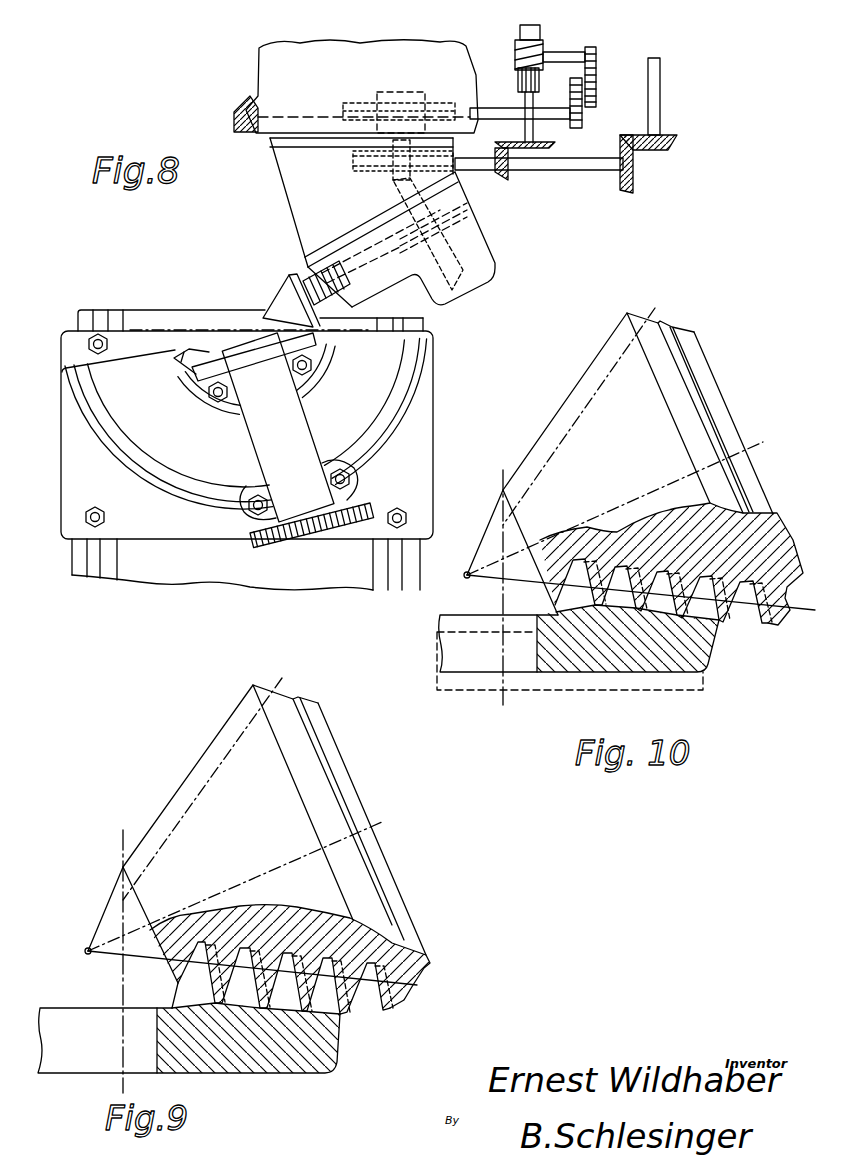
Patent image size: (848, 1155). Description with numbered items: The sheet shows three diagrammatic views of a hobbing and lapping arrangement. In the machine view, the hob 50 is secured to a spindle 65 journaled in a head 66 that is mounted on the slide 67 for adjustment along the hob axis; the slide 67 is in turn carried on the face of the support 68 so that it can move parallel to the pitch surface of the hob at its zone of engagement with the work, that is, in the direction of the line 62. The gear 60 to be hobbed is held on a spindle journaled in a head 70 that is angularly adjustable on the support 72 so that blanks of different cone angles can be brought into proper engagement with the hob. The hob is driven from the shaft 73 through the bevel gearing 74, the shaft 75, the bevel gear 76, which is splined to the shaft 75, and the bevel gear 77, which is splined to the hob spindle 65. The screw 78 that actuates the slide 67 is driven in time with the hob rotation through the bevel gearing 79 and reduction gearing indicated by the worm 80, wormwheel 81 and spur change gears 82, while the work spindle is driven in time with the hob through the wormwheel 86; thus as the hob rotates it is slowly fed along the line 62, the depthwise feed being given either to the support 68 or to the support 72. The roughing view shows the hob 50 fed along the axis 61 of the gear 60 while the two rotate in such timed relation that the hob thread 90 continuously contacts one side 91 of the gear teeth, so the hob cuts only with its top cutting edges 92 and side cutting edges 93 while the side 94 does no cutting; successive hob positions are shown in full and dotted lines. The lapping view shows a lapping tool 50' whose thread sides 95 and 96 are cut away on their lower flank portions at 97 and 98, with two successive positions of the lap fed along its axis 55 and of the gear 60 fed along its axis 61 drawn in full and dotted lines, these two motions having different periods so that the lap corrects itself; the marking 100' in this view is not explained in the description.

In FIG. 8, the hob 50 is at (286, 290).
In FIG. 9, the hob 50 is at (274, 830).
In FIG. 10, the lapping tool 50' is at (638, 461).
In FIG. 9, the axis of the lap 55 is at (376, 818).
In FIG. 10, the axis of the lap 55 is at (757, 444).
In FIG. 8, the gear 60 is at (192, 371).
In FIG. 9, the gear 60 is at (263, 1073).
In FIG. 10, the gear 60 is at (660, 674).
In FIG. 9, the axis of the work 61 is at (110, 972).
In FIG. 10, the axis of the work 61 is at (500, 604).
In FIG. 8, the line 62 is at (360, 312).
In FIG. 8, the spindle 65 is at (370, 238).
In FIG. 8, the head 66 is at (462, 298).
In FIG. 8, the slide 67 is at (292, 196).
In FIG. 8, the support 68 is at (270, 60).
In FIG. 8, the head 70 is at (306, 436).
In FIG. 8, the support 72 is at (430, 459).
In FIG. 8, the shaft 73 is at (661, 107).
In FIG. 8, the bevel gearing 74 is at (638, 152).
In FIG. 8, the shaft 75 is at (558, 171).
In FIG. 8, the bevel gear 76 is at (394, 178).
In FIG. 8, the bevel gear 77 is at (466, 268).
In FIG. 8, the screw 78 is at (485, 109).
In FIG. 8, the bevel gearing 79 is at (491, 140).
In FIG. 8, the worm 80 is at (546, 46).
In FIG. 8, the wormwheel 81 is at (516, 76).
In FIG. 8, the spur change gears 82 is at (597, 84).
In FIG. 8, the wormwheel 86 is at (373, 503).
In FIG. 9, the hob thread 90 is at (398, 990).
In FIG. 9, the side of the gear teeth 91 is at (343, 1012).
In FIG. 9, the top cutting edges 92 is at (388, 1008).
In FIG. 9, the side cutting edges 93 is at (410, 974).
In FIG. 9, the side of the hob teeth 94 is at (378, 980).
In FIG. 10, the side of the lap thread 95 is at (756, 622).
In FIG. 10, the side of the lap thread 96 is at (772, 618).
In FIG. 10, the cut-away lower flank portion 97 is at (758, 614).
In FIG. 10, the cut-away lower flank portion 98 is at (788, 588).
In FIG. 10, the tooth 100' is at (613, 636).